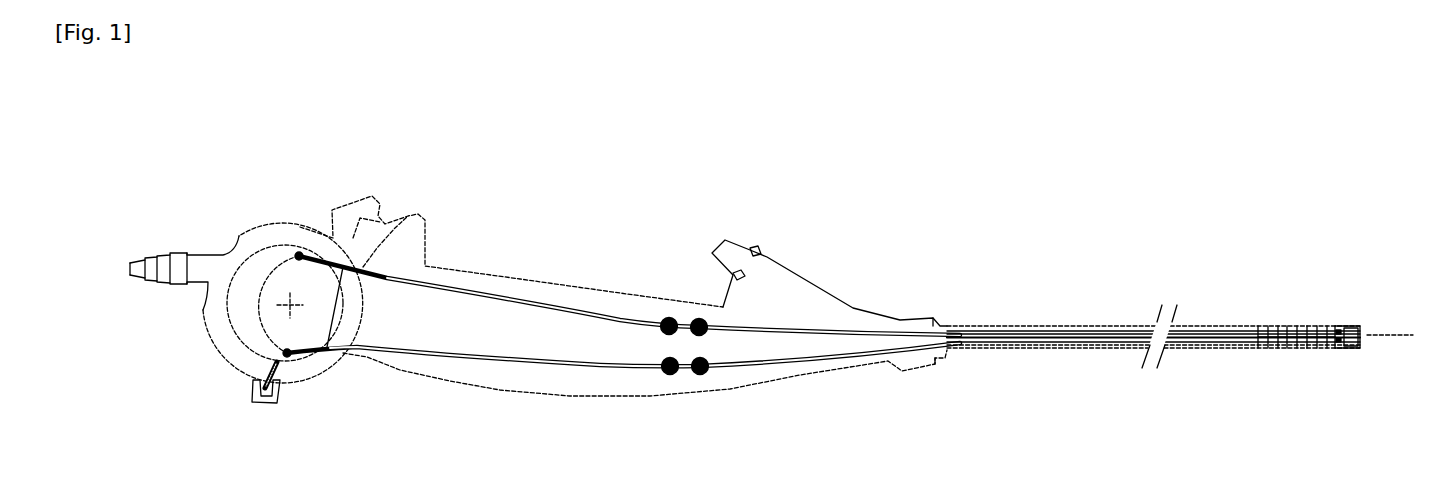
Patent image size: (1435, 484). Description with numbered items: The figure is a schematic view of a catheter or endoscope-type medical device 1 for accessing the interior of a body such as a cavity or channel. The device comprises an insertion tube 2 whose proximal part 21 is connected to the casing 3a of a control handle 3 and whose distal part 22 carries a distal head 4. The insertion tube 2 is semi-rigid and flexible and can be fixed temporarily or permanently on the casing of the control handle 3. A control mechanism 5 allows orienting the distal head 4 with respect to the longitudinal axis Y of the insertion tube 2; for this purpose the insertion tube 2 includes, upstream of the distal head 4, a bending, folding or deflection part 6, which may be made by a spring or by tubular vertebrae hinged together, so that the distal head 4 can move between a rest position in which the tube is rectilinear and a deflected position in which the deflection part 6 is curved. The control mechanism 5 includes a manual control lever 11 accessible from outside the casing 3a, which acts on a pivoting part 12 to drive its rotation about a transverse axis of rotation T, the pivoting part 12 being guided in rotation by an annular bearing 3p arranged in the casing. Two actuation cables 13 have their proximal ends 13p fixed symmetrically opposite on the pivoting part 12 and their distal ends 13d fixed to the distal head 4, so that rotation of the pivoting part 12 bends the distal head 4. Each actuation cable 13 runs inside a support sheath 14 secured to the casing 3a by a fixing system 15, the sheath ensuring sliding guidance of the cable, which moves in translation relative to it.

The medical device 1 is at (771, 299).
The insertion tube 2 is at (1154, 341).
The proximal part 21 is at (949, 352).
The distal part 22 is at (1338, 326).
The control handle 3 is at (538, 293).
The casing 3a is at (575, 383).
The annular bearing 3p is at (275, 252).
The distal head 4 is at (1360, 338).
The control mechanism 5 is at (243, 360).
The deflection part 6 is at (1291, 323).
The manual control lever 11 is at (279, 372).
The pivoting part 12 is at (247, 260).
The actuation cable 13 is at (793, 313).
The proximal end of actuation cable 13p is at (270, 304).
The distal end of actuation cable 13d is at (1343, 342).
The support sheath 14 is at (593, 360).
The fixing system 15 is at (699, 317).
The transverse axis of rotation T is at (292, 308).
The longitudinal axis Y is at (1405, 333).